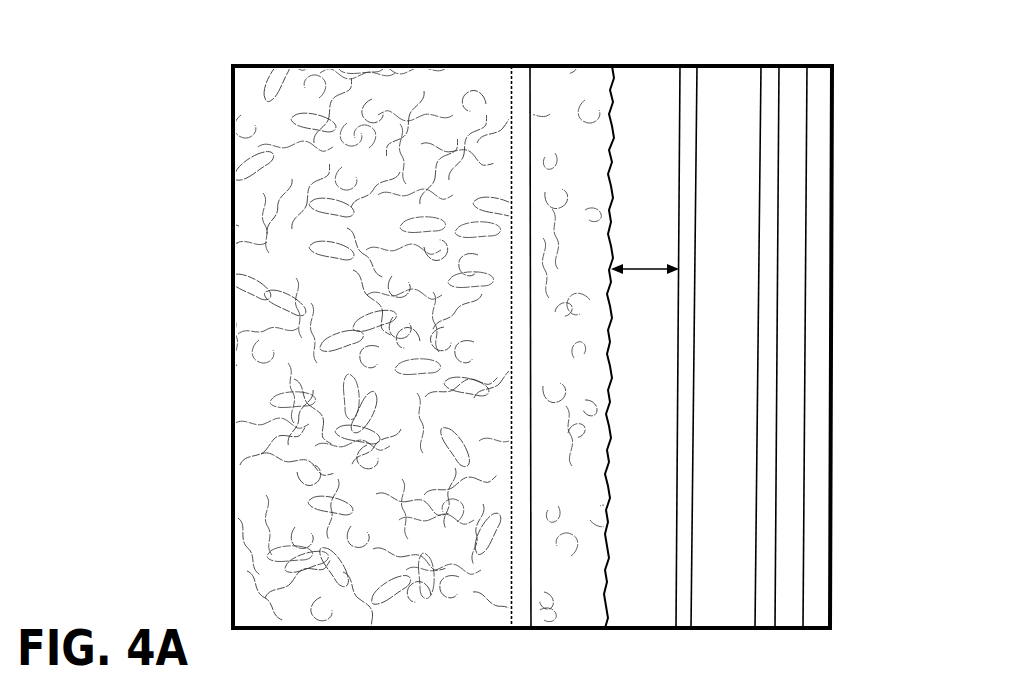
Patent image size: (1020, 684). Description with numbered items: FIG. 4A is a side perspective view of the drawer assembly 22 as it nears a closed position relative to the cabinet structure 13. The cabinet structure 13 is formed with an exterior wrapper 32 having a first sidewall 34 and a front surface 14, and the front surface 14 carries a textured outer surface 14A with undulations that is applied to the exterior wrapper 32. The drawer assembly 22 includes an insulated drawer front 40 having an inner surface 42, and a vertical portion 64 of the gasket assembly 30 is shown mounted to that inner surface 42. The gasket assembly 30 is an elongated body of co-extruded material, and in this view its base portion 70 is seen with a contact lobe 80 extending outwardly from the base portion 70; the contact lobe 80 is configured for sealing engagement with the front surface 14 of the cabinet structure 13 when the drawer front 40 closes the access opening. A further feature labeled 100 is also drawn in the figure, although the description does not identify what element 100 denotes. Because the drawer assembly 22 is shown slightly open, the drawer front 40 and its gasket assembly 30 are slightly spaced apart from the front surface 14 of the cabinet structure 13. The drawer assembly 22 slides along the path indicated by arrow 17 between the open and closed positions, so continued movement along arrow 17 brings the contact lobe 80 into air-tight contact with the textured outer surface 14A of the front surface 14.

The cabinet structure 13 is at (196, 156).
The front surface 14 is at (568, 97).
The textured outer surface 14A is at (614, 150).
The arrow 17 is at (648, 268).
The drawer assembly 22 is at (818, 638).
The gasket assembly 30 is at (668, 482).
The exterior wrapper 32 is at (345, 319).
The first sidewall 34 is at (346, 108).
The drawer front 40 is at (810, 353).
The inner surface 42 is at (801, 387).
The vertical portion 64 is at (671, 120).
The base portion 70 is at (790, 543).
The contact lobe 80 is at (722, 578).
The interface layer 100 is at (682, 565).